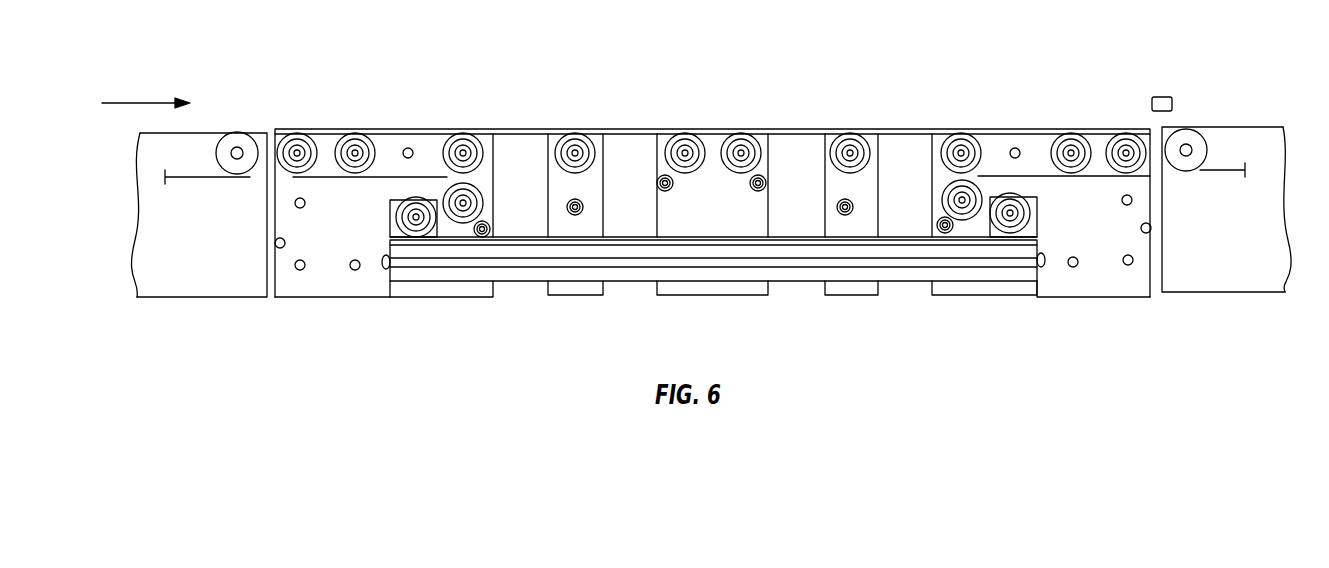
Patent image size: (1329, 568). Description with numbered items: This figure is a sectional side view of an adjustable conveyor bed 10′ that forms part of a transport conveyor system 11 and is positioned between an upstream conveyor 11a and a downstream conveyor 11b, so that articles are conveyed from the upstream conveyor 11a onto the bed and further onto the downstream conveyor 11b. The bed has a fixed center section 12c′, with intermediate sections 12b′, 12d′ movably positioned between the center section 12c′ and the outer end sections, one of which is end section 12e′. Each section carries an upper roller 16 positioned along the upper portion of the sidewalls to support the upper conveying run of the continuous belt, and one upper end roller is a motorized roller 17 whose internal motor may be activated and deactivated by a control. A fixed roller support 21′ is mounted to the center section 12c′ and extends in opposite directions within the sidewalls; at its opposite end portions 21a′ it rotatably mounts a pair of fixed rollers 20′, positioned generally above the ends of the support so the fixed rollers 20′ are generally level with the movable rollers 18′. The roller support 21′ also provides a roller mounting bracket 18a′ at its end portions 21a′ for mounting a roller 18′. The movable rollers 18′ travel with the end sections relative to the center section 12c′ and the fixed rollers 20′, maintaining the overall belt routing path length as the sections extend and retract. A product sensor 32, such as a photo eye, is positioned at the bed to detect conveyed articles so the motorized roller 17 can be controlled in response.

The adjustable conveyor bed 10′ is at (1008, 112).
The transport conveyor system 11 is at (257, 76).
The upstream conveyor 11a is at (188, 285).
The downstream conveyor 11b is at (1233, 277).
The intermediate section 12b′ is at (574, 300).
The center section 12c′ is at (711, 296).
The intermediate section 12d′ is at (852, 300).
The end section 12e′ is at (1121, 300).
The upper roller 16 is at (578, 148).
The motorized roller 17 is at (1126, 150).
The movable roller 18′ is at (470, 195).
The roller mounting bracket 18a′ is at (390, 203).
The fixed roller 20′ is at (406, 224).
The fixed roller support 21′ is at (632, 272).
The end portion 21a′ is at (420, 275).
The product sensor 32 is at (1175, 103).